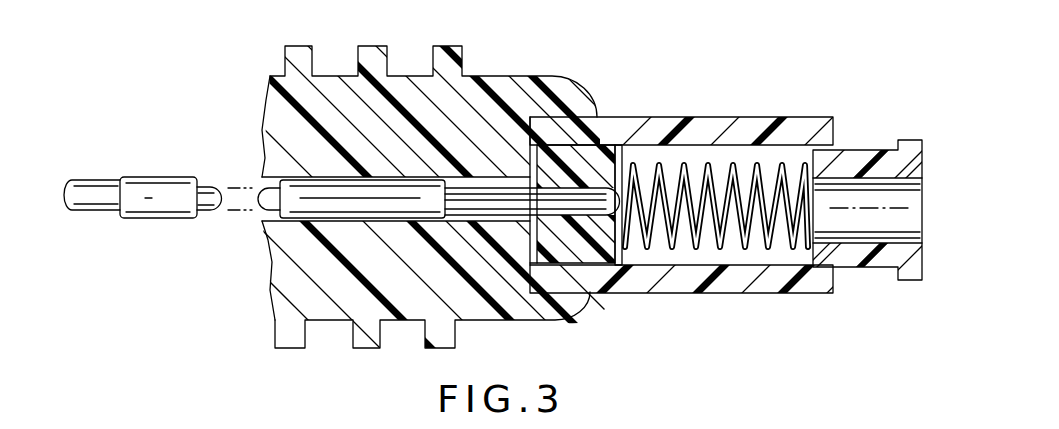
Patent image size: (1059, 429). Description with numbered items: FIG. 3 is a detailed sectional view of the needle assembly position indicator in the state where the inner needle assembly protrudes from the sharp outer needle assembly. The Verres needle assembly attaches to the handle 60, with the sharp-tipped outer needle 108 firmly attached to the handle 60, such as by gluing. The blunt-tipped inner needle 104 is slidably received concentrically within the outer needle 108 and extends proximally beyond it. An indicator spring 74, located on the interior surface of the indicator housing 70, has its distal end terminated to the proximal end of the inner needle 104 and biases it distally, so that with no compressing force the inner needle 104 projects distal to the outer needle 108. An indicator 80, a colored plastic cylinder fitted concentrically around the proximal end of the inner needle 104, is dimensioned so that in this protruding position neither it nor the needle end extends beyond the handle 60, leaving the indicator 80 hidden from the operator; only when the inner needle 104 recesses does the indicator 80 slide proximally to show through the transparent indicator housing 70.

The handle 60 is at (519, 77).
The indicator housing 70 is at (762, 117).
The indicator spring 74 is at (747, 243).
The indicator 80 is at (565, 150).
The inner needle 104 is at (212, 212).
The outer needle 108 is at (170, 178).